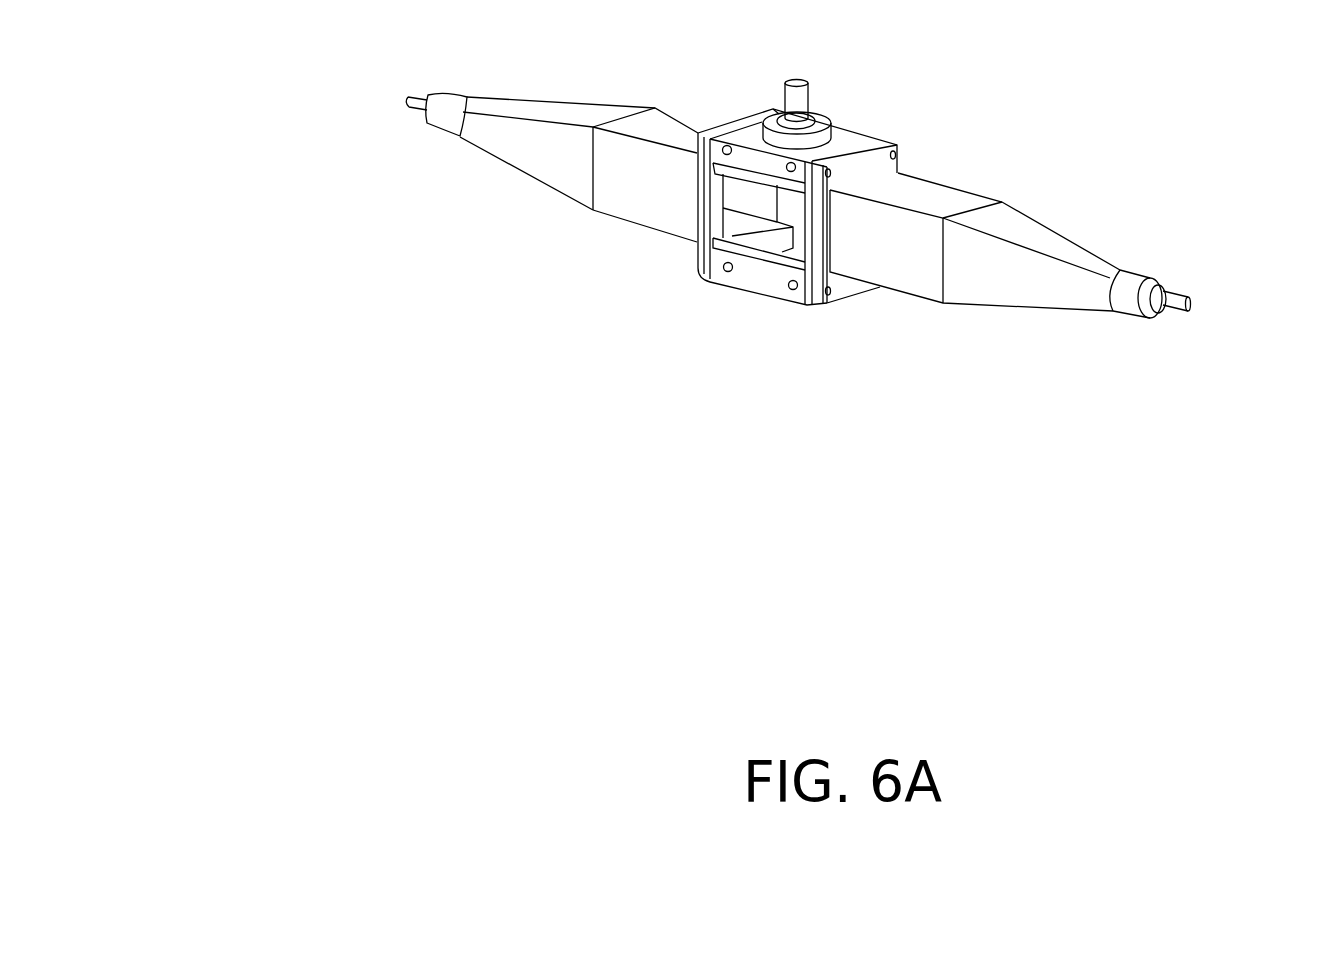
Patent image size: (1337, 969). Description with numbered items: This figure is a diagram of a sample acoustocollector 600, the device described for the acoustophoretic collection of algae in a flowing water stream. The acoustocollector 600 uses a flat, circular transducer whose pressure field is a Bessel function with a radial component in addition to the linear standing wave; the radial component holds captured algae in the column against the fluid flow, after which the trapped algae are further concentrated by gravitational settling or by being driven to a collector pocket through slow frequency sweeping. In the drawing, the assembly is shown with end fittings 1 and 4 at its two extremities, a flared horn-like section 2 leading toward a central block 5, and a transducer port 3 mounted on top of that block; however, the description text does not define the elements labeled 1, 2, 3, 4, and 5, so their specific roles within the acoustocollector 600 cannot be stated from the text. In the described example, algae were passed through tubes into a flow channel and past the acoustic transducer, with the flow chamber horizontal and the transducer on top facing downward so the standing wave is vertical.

The first coaxial connector 1 is at (404, 104).
The first horn waveguide section 2 is at (612, 178).
The coupling port 3 is at (832, 118).
The second coaxial connector 4 is at (1153, 277).
The central waveguide block 5 is at (762, 263).
The acoustocollector 600 is at (592, 428).